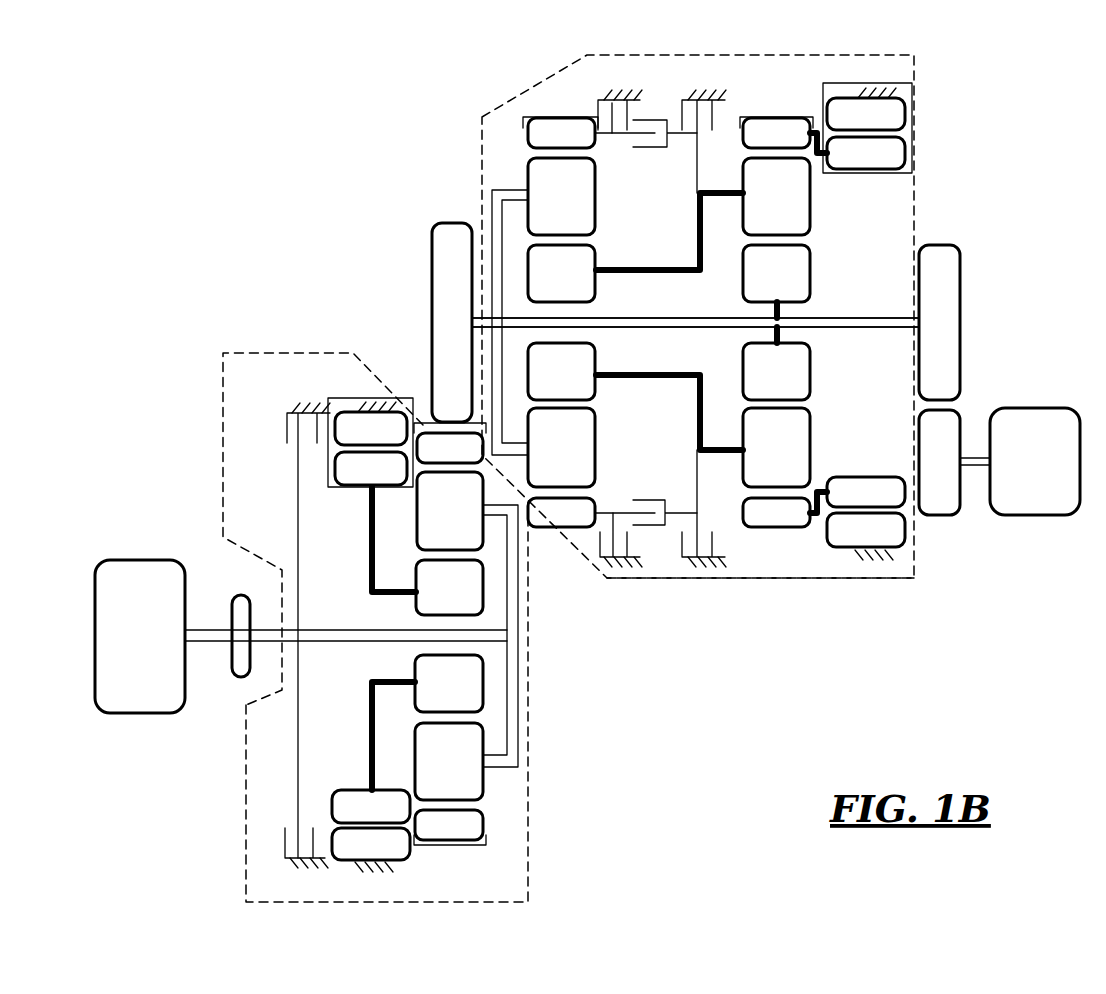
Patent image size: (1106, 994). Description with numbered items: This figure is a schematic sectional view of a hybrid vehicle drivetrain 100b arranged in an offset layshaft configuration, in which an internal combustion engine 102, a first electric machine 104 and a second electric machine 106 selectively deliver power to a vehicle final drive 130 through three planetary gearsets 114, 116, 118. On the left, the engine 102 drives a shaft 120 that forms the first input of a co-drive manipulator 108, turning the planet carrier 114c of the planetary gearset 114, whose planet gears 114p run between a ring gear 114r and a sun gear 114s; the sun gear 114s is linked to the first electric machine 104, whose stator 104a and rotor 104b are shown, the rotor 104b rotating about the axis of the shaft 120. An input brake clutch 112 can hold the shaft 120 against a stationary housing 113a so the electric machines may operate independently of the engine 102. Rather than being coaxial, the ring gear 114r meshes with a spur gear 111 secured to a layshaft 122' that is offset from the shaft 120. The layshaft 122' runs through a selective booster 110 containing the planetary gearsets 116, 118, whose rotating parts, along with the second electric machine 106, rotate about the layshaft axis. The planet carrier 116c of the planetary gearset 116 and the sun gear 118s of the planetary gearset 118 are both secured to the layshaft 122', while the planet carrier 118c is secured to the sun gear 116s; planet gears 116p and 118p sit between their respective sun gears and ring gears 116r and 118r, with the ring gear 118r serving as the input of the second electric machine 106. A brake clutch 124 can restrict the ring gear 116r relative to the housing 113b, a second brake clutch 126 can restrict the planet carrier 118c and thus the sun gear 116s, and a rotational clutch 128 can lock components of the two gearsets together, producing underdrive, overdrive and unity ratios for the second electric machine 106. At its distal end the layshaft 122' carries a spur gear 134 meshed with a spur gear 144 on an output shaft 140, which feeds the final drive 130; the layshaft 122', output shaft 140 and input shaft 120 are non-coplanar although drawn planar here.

The vehicle drivetrain 100b is at (519, 230).
The internal combustion engine 102 is at (140, 610).
The first electric machine 104 is at (358, 475).
The stator 104a is at (323, 448).
The rotor 104b is at (323, 487).
The second electric machine 106 is at (892, 321).
The co-drive manipulator 108 is at (284, 529).
The selective booster 110 is at (675, 316).
The spur gear 111 is at (417, 307).
The input brake clutch 112 is at (247, 635).
The housing 113a is at (387, 716).
The housing 113b is at (760, 596).
The planetary gearset 114 is at (409, 660).
The planet carrier 114c is at (551, 636).
The planet gears 114p is at (518, 761).
The ring gear 114r is at (516, 820).
The sun gear 114s is at (495, 722).
The planetary gearset 116 is at (560, 86).
The planet carrier 116c is at (459, 297).
The planet gears 116p is at (600, 322).
The ring gear 116r is at (599, 322).
The sun gear 116s is at (597, 330).
The planetary gearset 118 is at (776, 96).
The planet carrier 118c is at (674, 321).
The planet gears 118p is at (815, 322).
The ring gear 118r is at (806, 344).
The sun gear 118s is at (822, 326).
The shaft 120 is at (346, 637).
The layshaft 122' is at (695, 343).
The brake clutch 124 is at (605, 292).
The brake clutch 126 is at (728, 292).
The rotational clutch 128 is at (646, 276).
The vehicle final drive 130 is at (1035, 437).
The spur gear 134 is at (970, 302).
The output shaft 140 is at (1003, 519).
The spur gear 144 is at (950, 495).